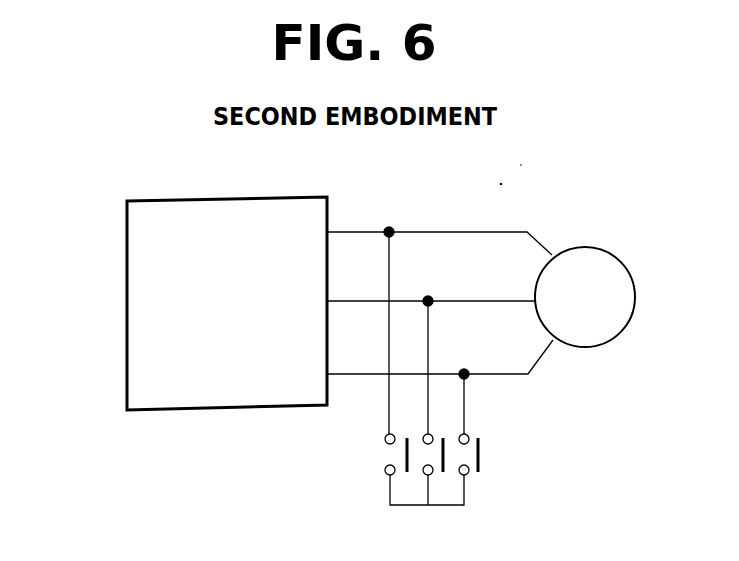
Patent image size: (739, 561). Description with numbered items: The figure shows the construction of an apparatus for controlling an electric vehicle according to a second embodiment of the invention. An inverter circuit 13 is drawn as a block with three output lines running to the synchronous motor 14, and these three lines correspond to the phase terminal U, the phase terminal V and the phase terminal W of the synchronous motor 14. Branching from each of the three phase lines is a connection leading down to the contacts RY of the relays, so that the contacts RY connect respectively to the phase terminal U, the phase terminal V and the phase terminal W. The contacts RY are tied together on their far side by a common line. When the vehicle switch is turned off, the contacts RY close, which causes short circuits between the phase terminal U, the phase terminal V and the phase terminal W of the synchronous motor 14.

The inverter circuit 13 is at (127, 312).
The synchronous motor 14 is at (623, 255).
The phase terminal U is at (444, 236).
The phase terminal V is at (431, 288).
The phase terminal W is at (440, 355).
The contacts of the relays RY is at (454, 469).